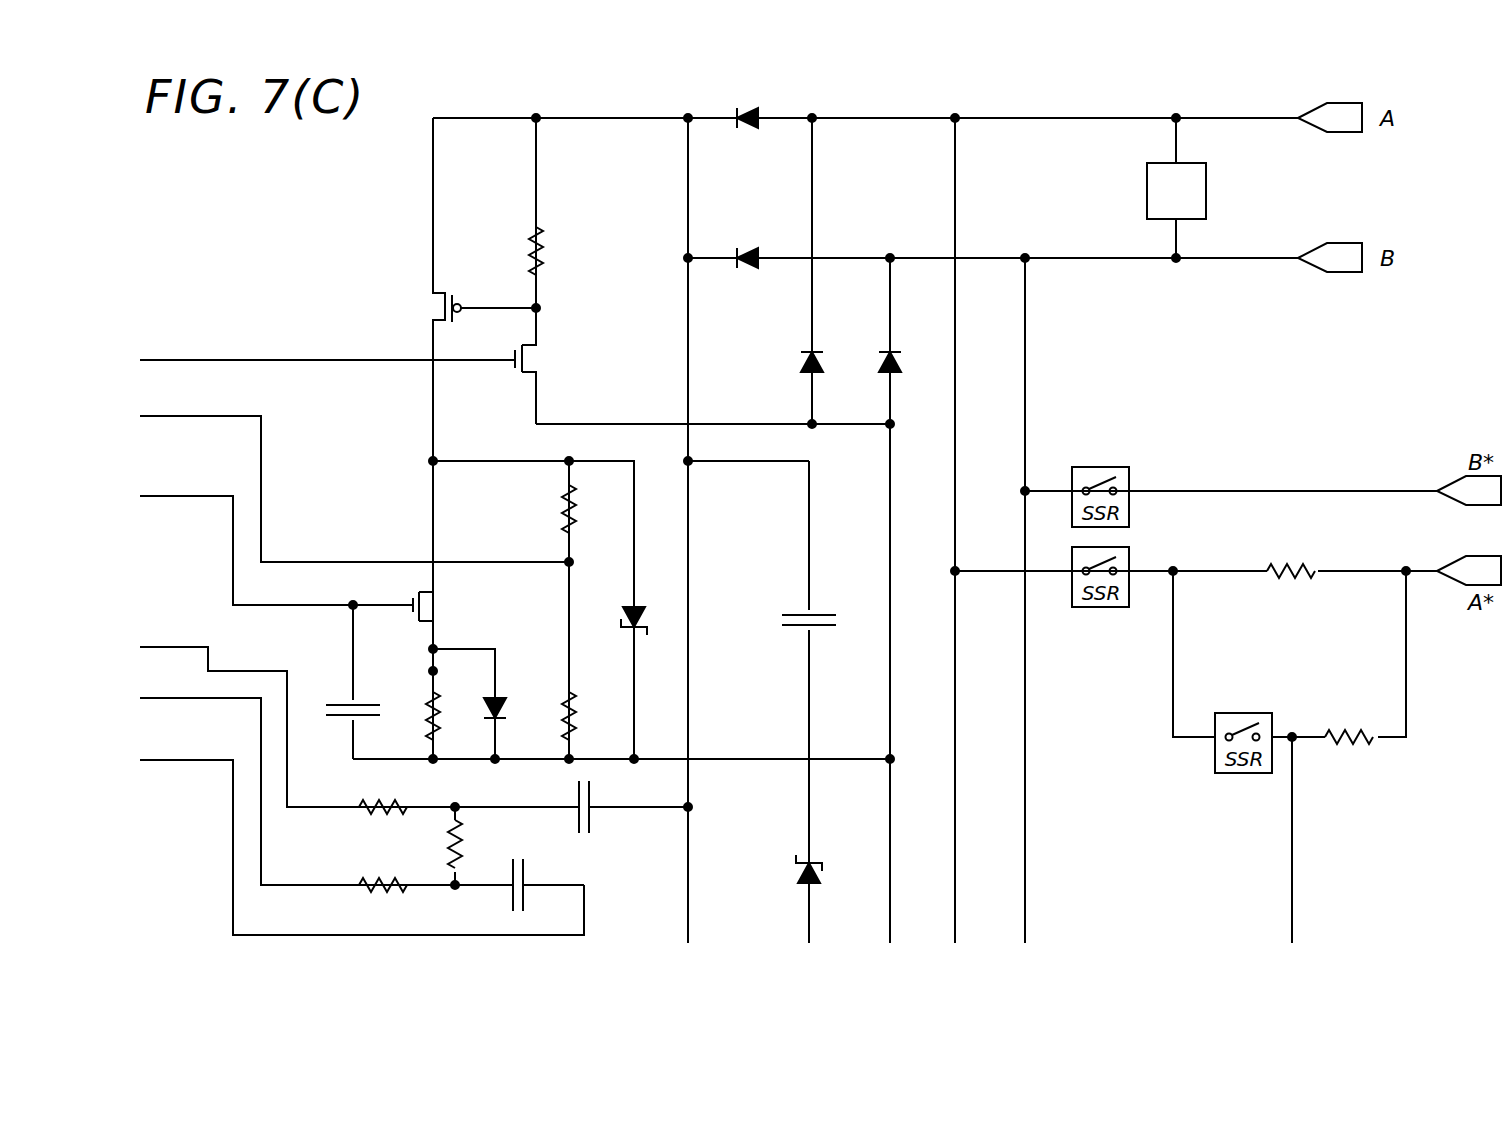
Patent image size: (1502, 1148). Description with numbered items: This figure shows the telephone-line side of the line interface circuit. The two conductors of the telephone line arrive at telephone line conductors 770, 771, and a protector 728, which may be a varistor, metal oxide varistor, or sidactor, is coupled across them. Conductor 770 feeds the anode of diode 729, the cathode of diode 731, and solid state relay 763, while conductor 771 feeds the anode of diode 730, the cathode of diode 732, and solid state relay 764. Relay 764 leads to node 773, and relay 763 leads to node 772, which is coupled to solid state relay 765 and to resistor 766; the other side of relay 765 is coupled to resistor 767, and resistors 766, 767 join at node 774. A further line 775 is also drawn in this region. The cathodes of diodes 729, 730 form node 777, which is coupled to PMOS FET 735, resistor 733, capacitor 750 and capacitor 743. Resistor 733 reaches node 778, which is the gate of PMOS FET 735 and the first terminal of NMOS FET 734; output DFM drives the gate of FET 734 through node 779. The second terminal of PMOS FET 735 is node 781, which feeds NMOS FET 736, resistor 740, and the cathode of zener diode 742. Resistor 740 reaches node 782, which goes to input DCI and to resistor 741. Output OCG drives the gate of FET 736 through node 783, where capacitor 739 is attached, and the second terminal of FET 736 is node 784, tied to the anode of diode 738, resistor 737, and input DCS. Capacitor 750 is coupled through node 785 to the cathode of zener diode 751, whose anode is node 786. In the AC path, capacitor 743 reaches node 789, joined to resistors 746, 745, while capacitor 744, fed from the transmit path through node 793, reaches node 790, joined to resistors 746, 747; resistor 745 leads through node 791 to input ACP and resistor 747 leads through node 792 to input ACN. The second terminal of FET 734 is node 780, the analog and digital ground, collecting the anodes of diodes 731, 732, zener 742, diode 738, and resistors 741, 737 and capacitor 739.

The protector 728 is at (1147, 183).
The diode 729 is at (758, 116).
The diode 730 is at (750, 268).
The diode 731 is at (800, 366).
The diode 732 is at (880, 350).
The resistor 733 is at (544, 252).
The NMOS FET 734 is at (525, 376).
The PMOS FET 735 is at (433, 312).
The NMOS FET 736 is at (440, 622).
The resistor 737 is at (444, 744).
The diode 738 is at (506, 690).
The capacitor 739 is at (340, 720).
The resistor 740 is at (562, 510).
The resistor 741 is at (574, 712).
The zener diode 742 is at (634, 601).
The capacitor 743 is at (592, 826).
The capacitor 744 is at (529, 870).
The resistor 745 is at (372, 806).
The resistor 746 is at (453, 855).
The resistor 747 is at (380, 887).
The capacitor 750 is at (816, 612).
The zener diode 751 is at (816, 855).
The solid state relay 763 is at (1100, 608).
The solid state relay 764 is at (1098, 466).
The solid state relay 765 is at (1236, 774).
The resistor 766 is at (1294, 571).
The resistor 767 is at (1342, 736).
The telephone line conductor 770 is at (1018, 118).
The telephone line conductor 771 is at (1106, 260).
The node 772 is at (1196, 571).
The node 773 is at (1228, 491).
The node 774 is at (1418, 569).
The line 775 is at (1292, 886).
The node 777 is at (609, 118).
The node 778 is at (539, 332).
The node 779 is at (224, 360).
The node 780 is at (572, 424).
The node 781 is at (432, 385).
The node 782 is at (297, 560).
The node 783 is at (208, 491).
The node 784 is at (454, 650).
The node 785 is at (808, 706).
The node 786 is at (808, 920).
The node 789 is at (488, 808).
The node 790 is at (480, 887).
The node 791 is at (318, 808).
The node 792 is at (288, 886).
The node 793 is at (584, 910).